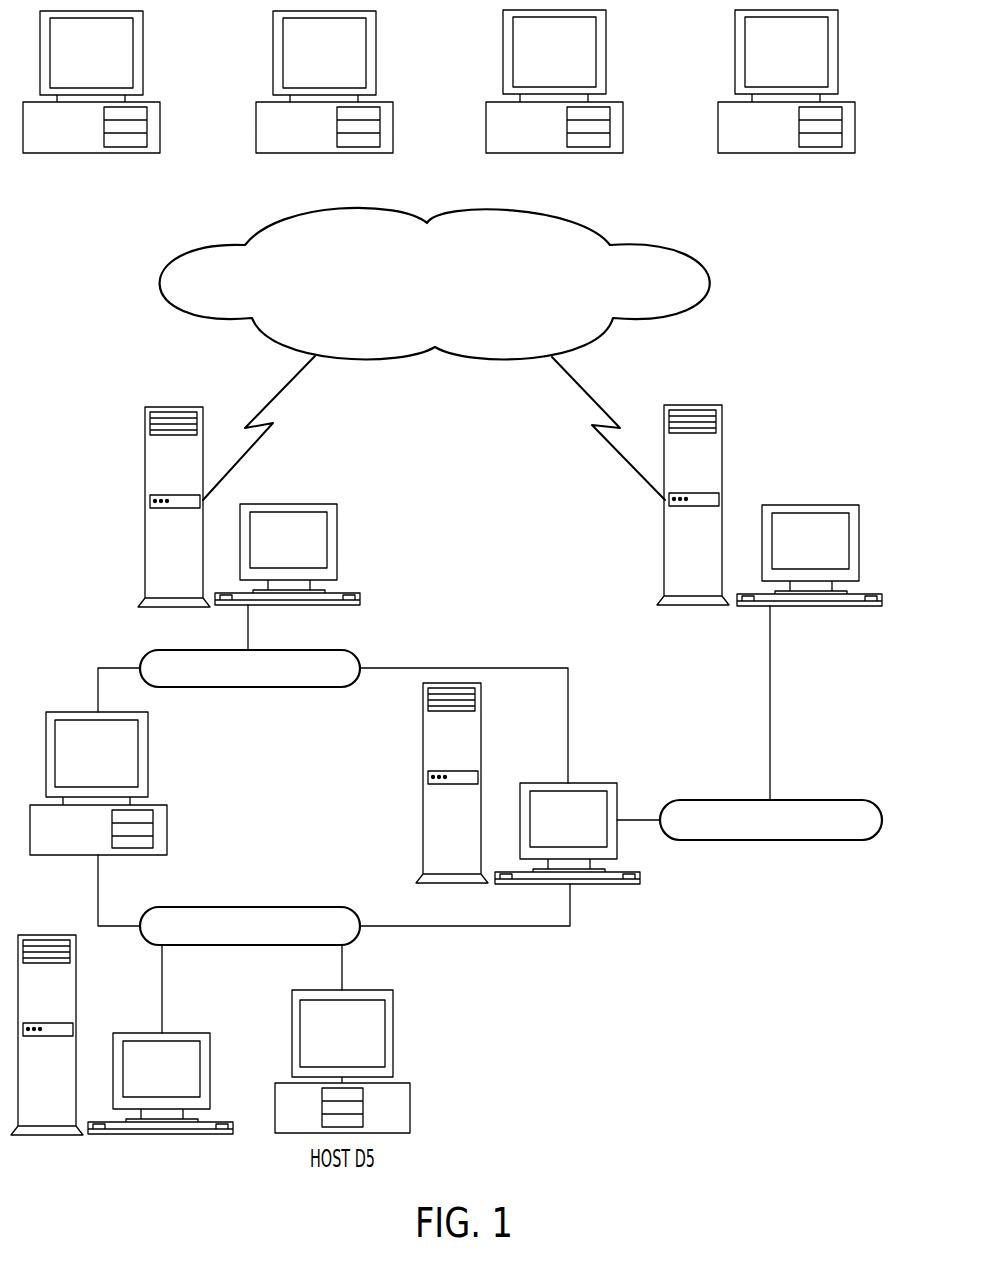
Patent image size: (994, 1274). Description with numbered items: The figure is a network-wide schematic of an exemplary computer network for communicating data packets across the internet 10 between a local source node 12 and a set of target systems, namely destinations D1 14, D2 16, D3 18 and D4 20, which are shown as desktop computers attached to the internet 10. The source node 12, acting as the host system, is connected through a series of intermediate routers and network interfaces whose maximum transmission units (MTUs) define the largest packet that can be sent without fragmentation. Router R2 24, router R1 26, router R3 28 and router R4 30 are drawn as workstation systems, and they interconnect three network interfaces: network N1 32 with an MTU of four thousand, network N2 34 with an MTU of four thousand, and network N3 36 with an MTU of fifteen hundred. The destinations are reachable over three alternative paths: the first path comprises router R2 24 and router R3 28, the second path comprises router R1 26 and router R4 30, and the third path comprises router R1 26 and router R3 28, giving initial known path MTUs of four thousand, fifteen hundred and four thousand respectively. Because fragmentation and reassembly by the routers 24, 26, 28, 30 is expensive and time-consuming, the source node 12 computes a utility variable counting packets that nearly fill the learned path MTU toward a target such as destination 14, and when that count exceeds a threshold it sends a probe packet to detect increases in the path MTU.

The internet 10 is at (710, 285).
The source node 12 is at (210, 1043).
The destination D1 14 is at (143, 53).
The destination D2 16 is at (376, 53).
The destination D3 18 is at (606, 52).
The destination D4 20 is at (838, 52).
The router R2 24 is at (148, 752).
The router R1 26 is at (599, 783).
The router R3 28 is at (337, 543).
The router R4 30 is at (859, 537).
The network interface N1 32 is at (250, 906).
The network interface N2 34 is at (362, 657).
The network interface N3 36 is at (846, 840).